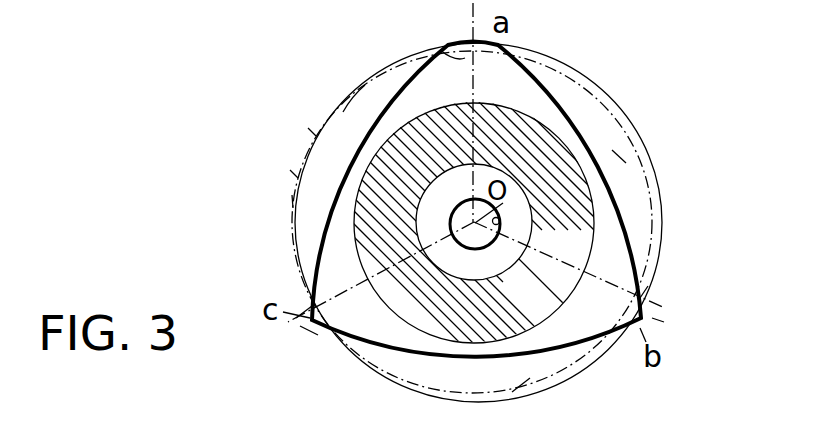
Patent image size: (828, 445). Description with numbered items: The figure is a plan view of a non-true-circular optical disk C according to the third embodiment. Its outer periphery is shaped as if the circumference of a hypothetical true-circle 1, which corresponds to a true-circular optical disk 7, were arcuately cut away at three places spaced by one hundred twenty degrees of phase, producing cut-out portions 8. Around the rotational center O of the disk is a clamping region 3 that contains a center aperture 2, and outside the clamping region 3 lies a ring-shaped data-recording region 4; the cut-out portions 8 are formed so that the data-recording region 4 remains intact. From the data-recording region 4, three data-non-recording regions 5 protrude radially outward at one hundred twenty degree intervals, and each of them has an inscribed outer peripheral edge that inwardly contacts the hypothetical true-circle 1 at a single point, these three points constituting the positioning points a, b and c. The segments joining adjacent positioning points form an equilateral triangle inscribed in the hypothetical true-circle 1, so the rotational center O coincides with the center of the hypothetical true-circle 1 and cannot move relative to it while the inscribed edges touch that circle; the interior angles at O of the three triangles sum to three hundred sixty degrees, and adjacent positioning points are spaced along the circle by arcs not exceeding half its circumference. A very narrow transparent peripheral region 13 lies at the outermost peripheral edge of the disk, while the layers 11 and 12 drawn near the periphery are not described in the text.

The hypothetical true-circle 1 is at (610, 74).
The center aperture 2 is at (508, 225).
The clamping region 3 is at (520, 232).
The data-recording region 4 is at (578, 260).
The data-non-recording region 5 is at (455, 54).
The true-circular optical disk 7 is at (598, 128).
The cut-out portion 8 is at (356, 104).
The housing inner layer 11 is at (312, 134).
The housing intermediate layer 12 is at (294, 175).
The transparent peripheral region 13 is at (293, 201).
The non-true-circular optical disk C is at (586, 62).